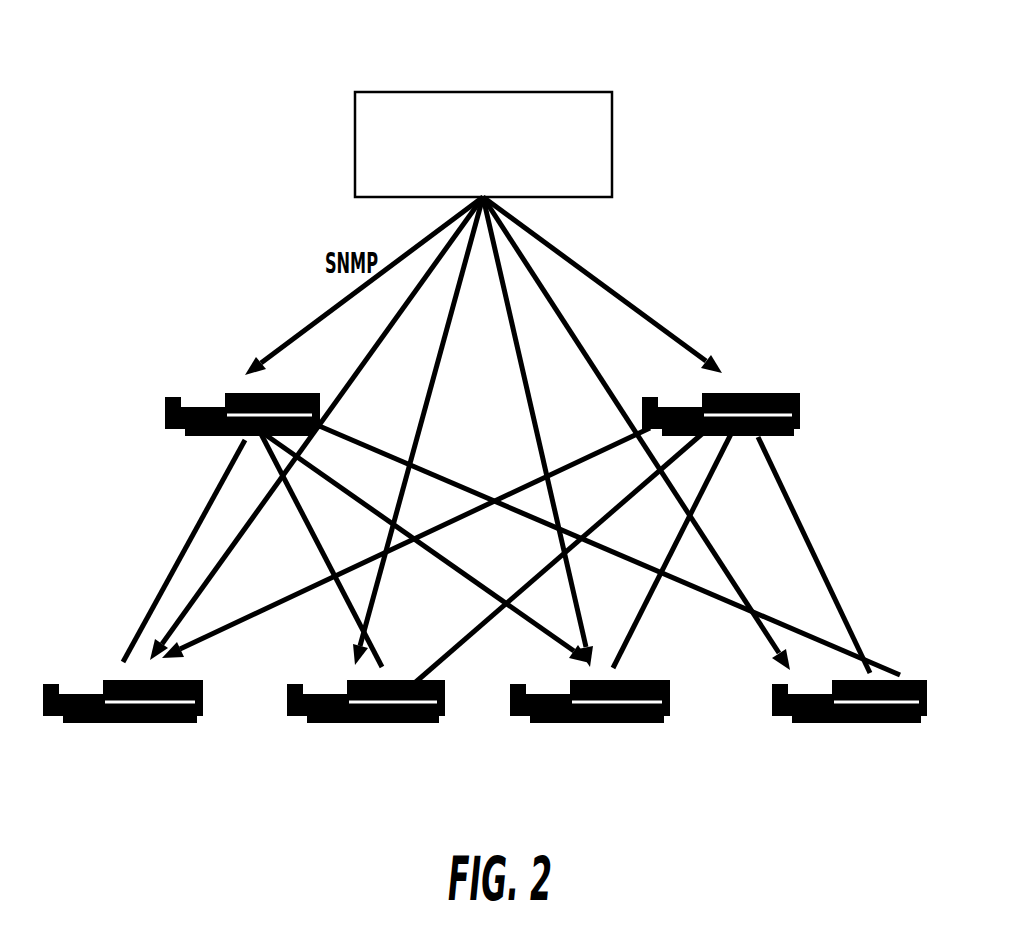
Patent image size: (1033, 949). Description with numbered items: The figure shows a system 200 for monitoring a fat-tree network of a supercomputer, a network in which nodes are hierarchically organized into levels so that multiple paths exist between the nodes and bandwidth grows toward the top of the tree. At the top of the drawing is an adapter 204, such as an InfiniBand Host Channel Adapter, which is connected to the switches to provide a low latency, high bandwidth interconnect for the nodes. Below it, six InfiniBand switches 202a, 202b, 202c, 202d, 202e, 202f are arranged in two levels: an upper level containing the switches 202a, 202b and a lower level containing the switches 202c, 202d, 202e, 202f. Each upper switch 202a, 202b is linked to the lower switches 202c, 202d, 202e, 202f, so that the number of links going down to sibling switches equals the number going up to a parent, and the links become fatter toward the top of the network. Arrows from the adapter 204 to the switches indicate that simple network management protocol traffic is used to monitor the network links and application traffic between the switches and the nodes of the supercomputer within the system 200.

The system 200 is at (495, 43).
The adapter 204 is at (538, 180).
The switch 202a is at (240, 390).
The switch 202b is at (721, 390).
The switch 202c is at (123, 728).
The switch 202d is at (366, 728).
The switch 202e is at (590, 728).
The switch 202f is at (849, 728).